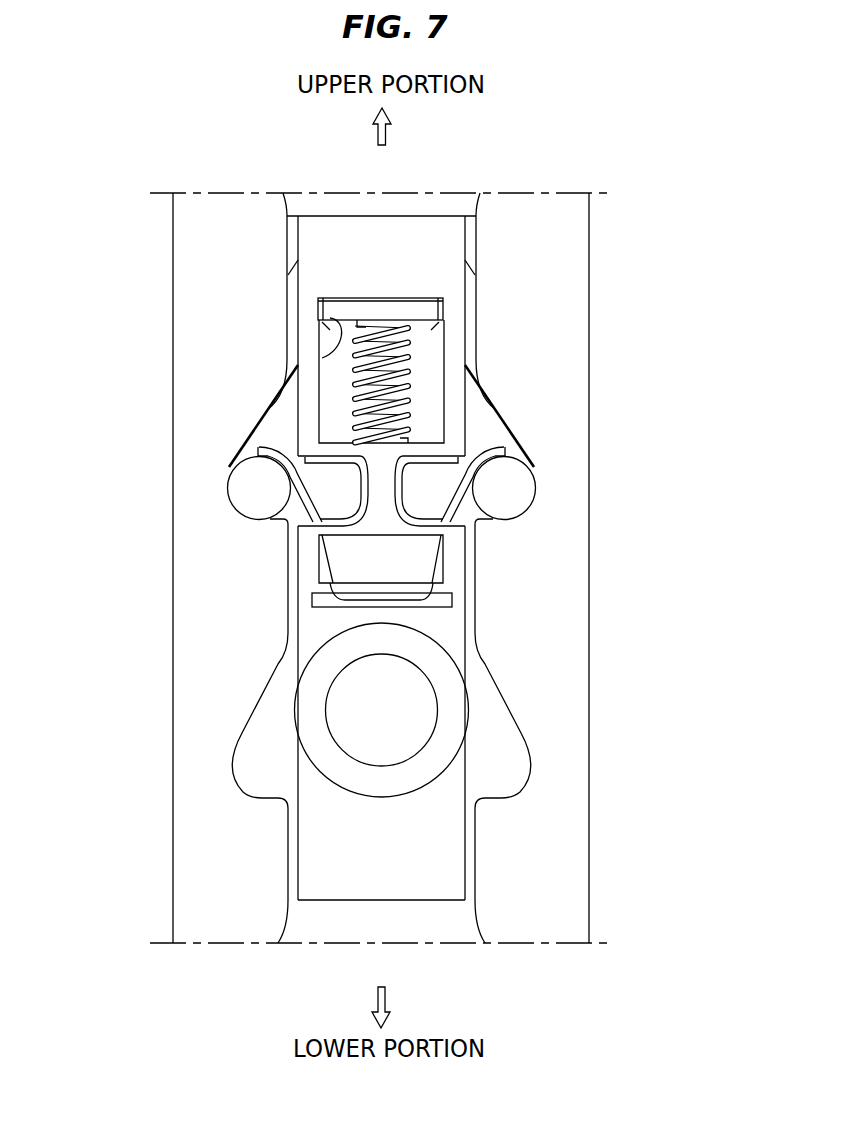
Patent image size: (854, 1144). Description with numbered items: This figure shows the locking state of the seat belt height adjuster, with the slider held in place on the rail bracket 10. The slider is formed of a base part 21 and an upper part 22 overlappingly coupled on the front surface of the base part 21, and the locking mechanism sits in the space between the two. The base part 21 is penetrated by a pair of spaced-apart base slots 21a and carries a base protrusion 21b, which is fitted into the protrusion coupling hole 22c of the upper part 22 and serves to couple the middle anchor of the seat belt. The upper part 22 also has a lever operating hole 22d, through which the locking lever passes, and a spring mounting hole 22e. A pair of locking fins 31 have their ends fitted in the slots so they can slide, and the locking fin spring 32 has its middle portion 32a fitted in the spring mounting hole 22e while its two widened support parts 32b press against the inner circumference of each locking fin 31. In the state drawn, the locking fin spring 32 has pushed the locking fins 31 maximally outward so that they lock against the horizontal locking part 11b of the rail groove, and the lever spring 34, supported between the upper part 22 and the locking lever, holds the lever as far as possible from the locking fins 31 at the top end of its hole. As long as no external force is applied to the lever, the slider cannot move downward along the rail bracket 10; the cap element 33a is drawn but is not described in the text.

The rail bracket 10 is at (198, 855).
The horizontal locking part 11b is at (270, 516).
The base part 21 is at (430, 346).
The base slot 21a is at (300, 498).
The base protrusion 21b is at (310, 717).
The upper part 22 is at (442, 240).
The protrusion coupling hole 22c is at (434, 776).
The lever operating hole 22d is at (330, 318).
The spring mounting hole 22e is at (313, 600).
The locking fin 31 is at (245, 478).
The locking fin spring 32 is at (320, 567).
The middle portion 32a is at (385, 603).
The support part 32b is at (265, 440).
The spring cap 33a is at (355, 308).
The lever spring 34 is at (408, 380).